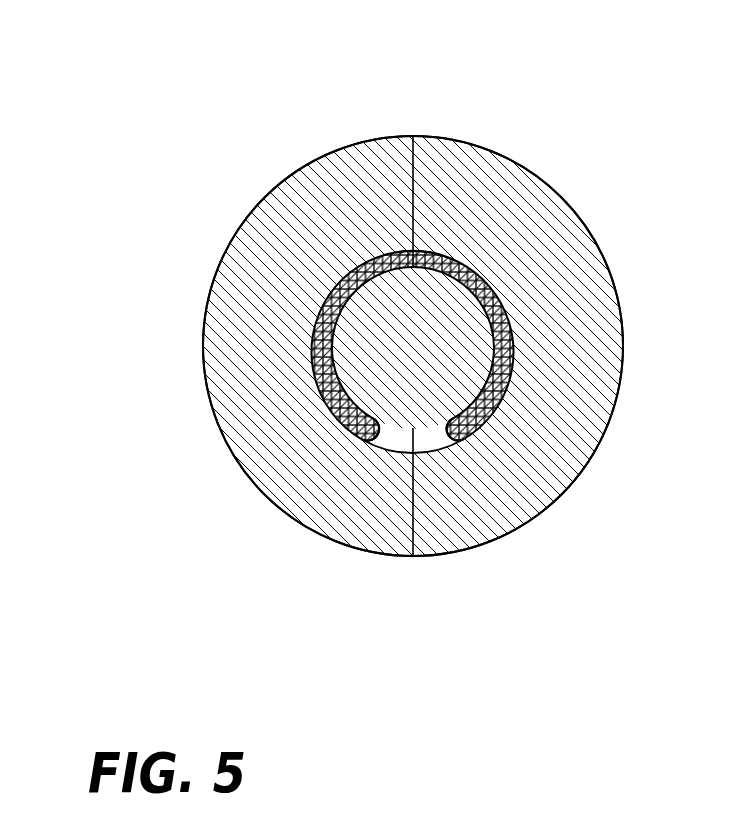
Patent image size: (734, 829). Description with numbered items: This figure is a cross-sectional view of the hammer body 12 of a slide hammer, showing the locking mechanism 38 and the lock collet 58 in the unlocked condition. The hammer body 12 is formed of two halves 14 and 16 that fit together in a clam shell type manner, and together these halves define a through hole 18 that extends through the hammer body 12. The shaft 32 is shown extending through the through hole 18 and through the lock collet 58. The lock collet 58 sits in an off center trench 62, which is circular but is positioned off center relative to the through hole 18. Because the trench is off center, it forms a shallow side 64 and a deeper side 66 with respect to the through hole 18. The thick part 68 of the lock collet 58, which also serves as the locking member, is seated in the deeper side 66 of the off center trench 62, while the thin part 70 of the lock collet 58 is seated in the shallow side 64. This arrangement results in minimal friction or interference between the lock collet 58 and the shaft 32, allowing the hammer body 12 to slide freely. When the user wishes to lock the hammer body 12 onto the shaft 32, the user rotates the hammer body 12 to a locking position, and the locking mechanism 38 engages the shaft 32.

The hammer body 12 is at (615, 284).
The first half of hammer body 14 is at (513, 219).
The second half of hammer body 16 is at (322, 215).
The through hole 18 is at (309, 353).
The shaft 32 is at (426, 358).
The locking mechanism 38 is at (198, 250).
The lock collet 58 is at (505, 372).
The off center trench 62 is at (431, 434).
The shallow side of off center trench 64 is at (435, 253).
The deeper side of off center trench 66 is at (388, 438).
The thick part of lock collet 68 is at (353, 430).
The thin part of lock collet 70 is at (395, 260).